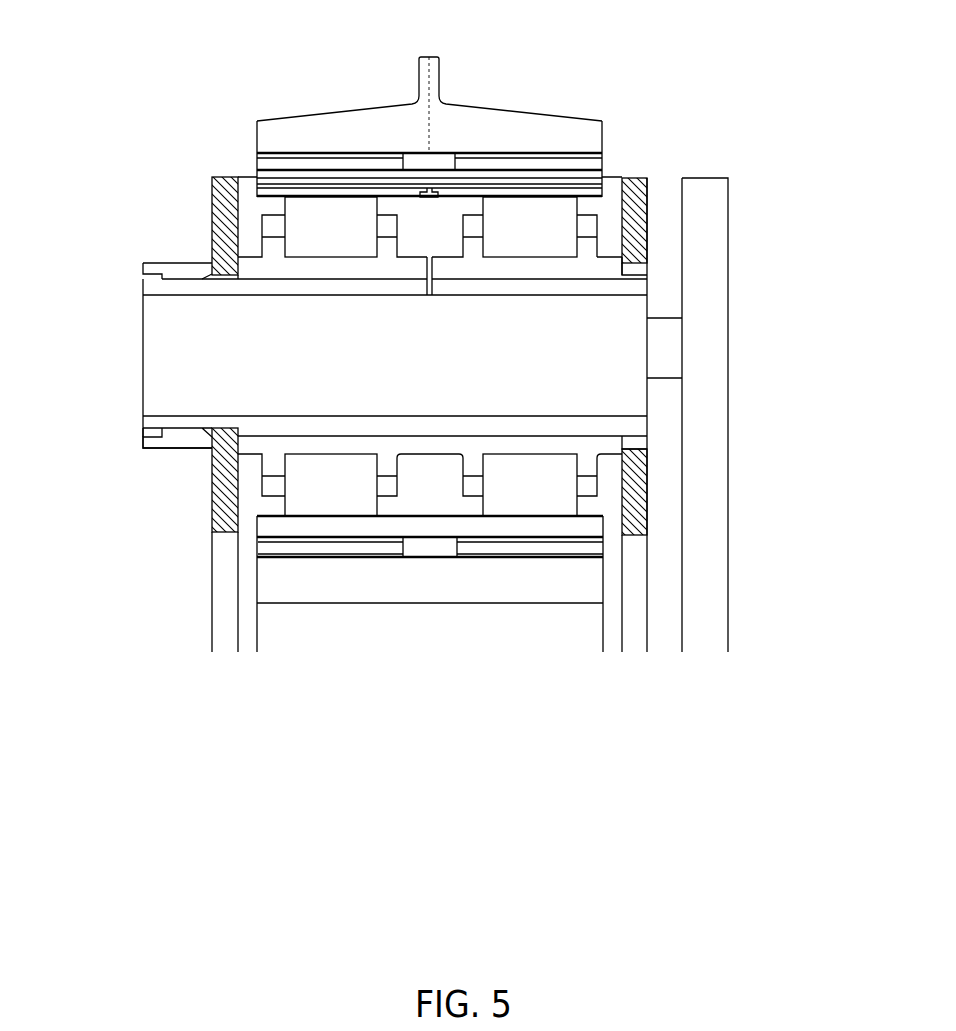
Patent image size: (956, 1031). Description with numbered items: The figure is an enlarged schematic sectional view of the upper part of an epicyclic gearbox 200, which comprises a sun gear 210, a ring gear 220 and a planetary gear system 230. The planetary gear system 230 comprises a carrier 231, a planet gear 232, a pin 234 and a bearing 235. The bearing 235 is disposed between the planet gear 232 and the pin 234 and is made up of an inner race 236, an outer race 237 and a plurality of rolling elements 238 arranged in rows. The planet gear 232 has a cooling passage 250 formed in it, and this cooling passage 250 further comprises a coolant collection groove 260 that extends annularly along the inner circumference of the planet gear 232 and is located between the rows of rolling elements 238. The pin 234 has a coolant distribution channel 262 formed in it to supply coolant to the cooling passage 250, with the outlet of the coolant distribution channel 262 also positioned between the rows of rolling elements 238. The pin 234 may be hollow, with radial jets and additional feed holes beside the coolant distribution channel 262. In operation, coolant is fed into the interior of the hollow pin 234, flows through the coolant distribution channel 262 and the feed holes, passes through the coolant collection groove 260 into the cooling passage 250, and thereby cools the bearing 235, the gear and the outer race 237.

The epicyclic gearbox 200 is at (545, 63).
The sun gear 210 is at (595, 587).
The ring gear 220 is at (365, 123).
The planetary gear system 230 is at (129, 236).
The carrier 231 is at (630, 503).
The planet gear 232 is at (265, 530).
The pin 234 is at (170, 423).
The bearing 235 is at (191, 173).
The inner race 236 is at (599, 267).
The outer race 237 is at (592, 198).
The rolling elements 238 is at (332, 222).
The cooling passage 250 is at (611, 167).
The coolant collection groove 260 is at (429, 199).
The coolant distribution channel 262 is at (430, 288).